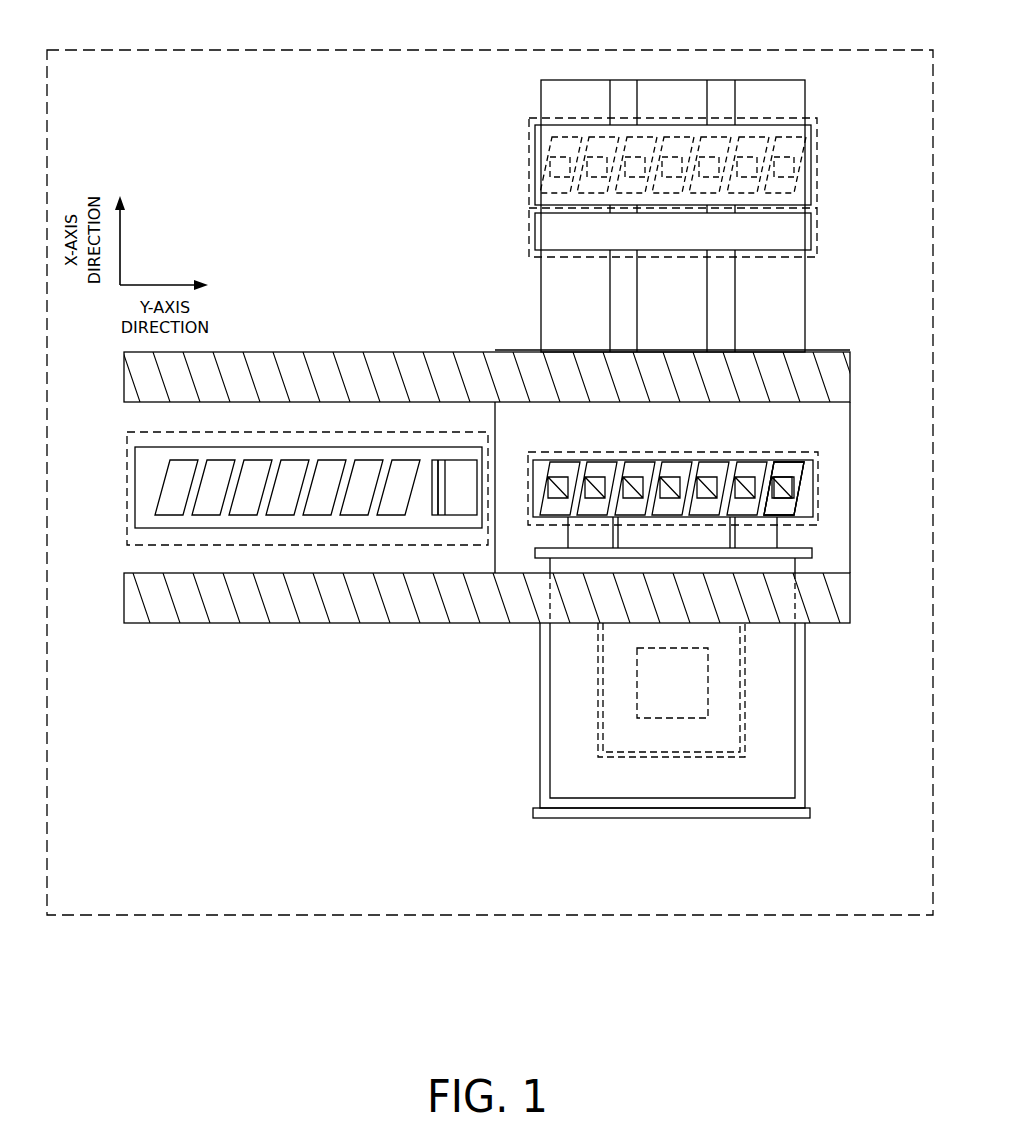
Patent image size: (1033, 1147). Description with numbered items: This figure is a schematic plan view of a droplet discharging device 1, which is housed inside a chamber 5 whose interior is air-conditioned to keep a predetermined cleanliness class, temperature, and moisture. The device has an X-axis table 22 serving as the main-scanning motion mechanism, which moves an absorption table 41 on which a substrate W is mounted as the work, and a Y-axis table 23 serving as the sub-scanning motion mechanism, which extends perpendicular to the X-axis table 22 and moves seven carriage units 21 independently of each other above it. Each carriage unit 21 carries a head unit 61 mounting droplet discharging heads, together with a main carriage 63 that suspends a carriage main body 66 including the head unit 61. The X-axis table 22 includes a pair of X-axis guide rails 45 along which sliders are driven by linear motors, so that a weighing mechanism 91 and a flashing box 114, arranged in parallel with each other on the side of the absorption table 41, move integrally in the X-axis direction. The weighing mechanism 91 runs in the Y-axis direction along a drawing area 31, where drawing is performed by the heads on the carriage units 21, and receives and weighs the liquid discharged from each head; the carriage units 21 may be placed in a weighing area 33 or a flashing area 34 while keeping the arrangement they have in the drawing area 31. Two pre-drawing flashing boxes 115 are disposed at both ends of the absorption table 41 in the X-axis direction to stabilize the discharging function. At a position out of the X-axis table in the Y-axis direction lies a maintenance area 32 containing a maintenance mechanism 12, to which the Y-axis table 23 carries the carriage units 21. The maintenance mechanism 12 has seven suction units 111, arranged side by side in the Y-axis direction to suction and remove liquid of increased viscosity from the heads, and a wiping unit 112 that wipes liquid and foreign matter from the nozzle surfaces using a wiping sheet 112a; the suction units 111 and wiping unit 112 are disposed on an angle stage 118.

The droplet discharging device 1 is at (334, 232).
The chamber 5 is at (836, 50).
The maintenance mechanism 12 is at (271, 546).
The carriage unit 21 is at (568, 118).
The X-axis table 22 is at (654, 845).
The Y-axis table 23 is at (866, 374).
The drawing area 31 is at (820, 452).
The maintenance area 32 is at (127, 437).
The weighing area 33 is at (821, 122).
The flashing area 34 is at (819, 248).
The absorption table 41 is at (540, 747).
The X-axis guide rail 45 is at (623, 88).
The head unit 61 is at (774, 416).
The main carriage 63 is at (790, 478).
The carriage main body 66 is at (788, 467).
The weighing mechanism 91 is at (812, 160).
The suction unit 111 is at (165, 515).
The wiping unit 112 is at (462, 530).
The wiping sheet 112a is at (441, 517).
The flashing box 114 is at (812, 222).
The pre-drawing flashing box 115 is at (815, 552).
The angle stage 118 is at (135, 466).
The substrate W is at (806, 684).